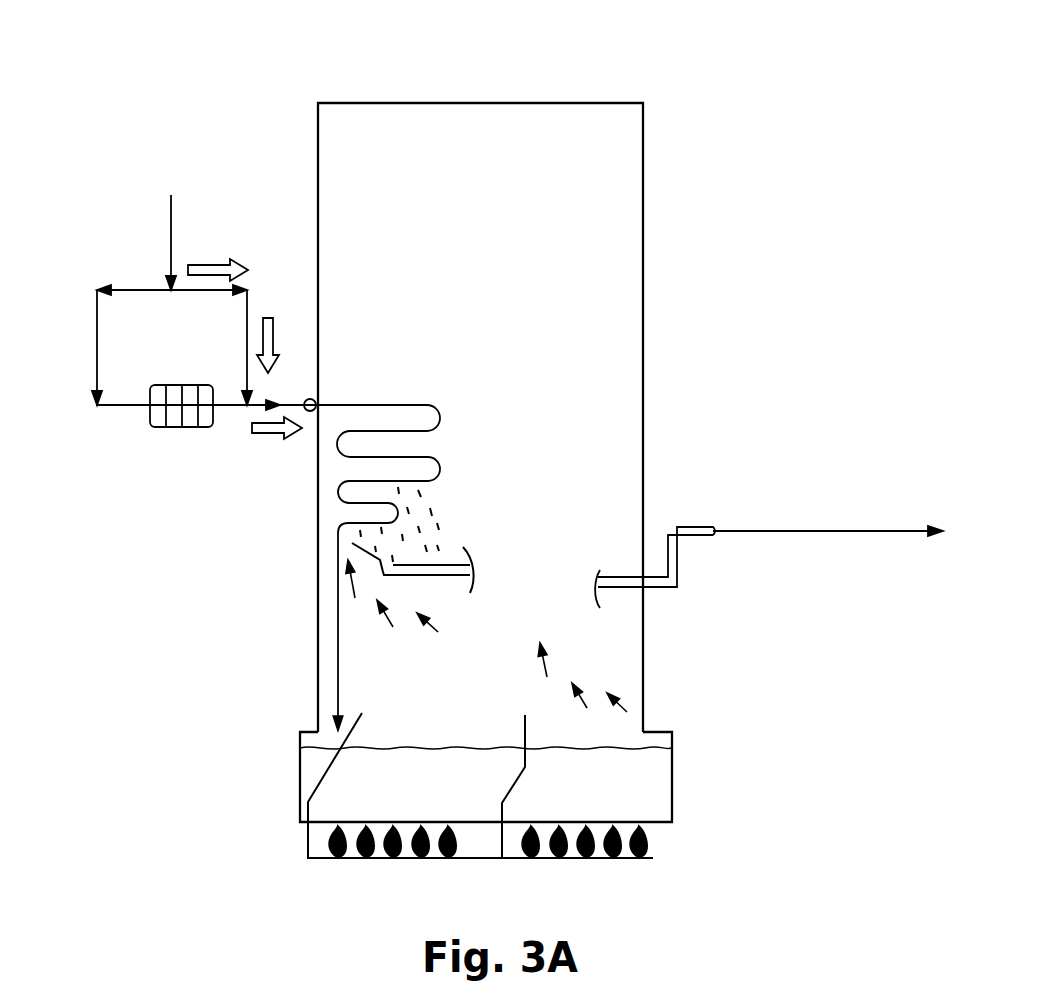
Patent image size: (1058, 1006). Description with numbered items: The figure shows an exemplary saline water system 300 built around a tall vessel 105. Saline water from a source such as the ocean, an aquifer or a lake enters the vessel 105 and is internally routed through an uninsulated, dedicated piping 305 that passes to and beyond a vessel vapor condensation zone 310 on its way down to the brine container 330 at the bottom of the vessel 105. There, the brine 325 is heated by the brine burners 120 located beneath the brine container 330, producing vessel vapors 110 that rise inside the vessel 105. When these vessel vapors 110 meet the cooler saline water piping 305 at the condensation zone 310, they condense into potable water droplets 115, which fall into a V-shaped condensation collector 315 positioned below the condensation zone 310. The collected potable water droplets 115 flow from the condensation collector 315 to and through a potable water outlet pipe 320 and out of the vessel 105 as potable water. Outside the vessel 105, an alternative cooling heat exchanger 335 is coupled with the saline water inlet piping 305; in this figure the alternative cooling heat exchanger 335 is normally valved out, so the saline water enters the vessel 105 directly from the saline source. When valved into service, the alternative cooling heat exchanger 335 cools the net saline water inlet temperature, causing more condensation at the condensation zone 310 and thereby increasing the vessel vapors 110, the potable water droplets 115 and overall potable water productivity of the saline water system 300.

The saline water system 300 is at (795, 47).
The vessel 105 is at (480, 417).
The piping 305 is at (182, 177).
The alternative cooling heat exchanger 335 is at (142, 412).
The vessel vapor condensation zone 310 is at (425, 388).
The potable water droplets 115 is at (433, 497).
The condensation collector 315 is at (393, 565).
The potable water outlet pipe 320 is at (458, 555).
The vessel vapors 110 is at (593, 677).
The brine 325 is at (313, 768).
The brine container 330 is at (672, 779).
The brine burners 120 is at (663, 843).